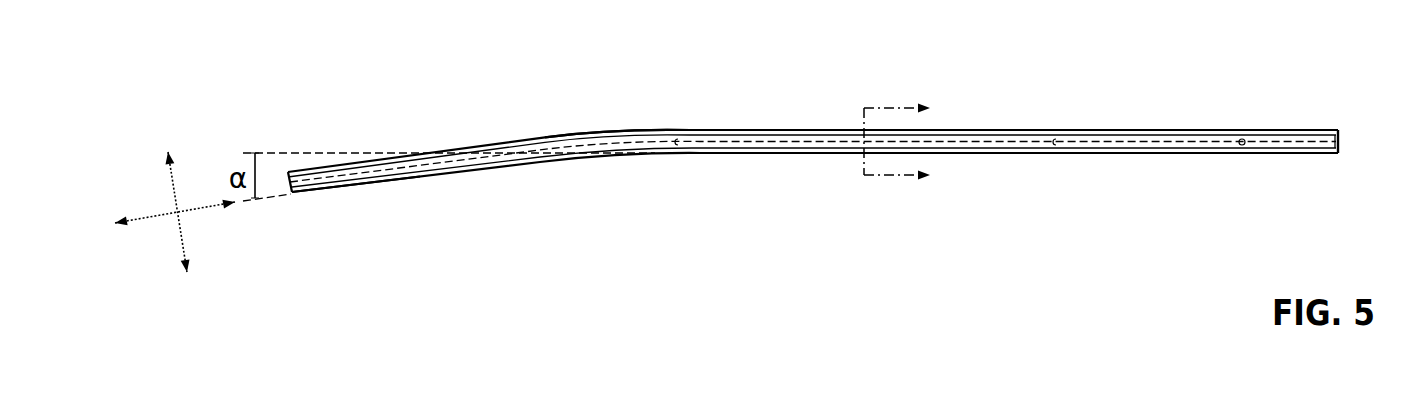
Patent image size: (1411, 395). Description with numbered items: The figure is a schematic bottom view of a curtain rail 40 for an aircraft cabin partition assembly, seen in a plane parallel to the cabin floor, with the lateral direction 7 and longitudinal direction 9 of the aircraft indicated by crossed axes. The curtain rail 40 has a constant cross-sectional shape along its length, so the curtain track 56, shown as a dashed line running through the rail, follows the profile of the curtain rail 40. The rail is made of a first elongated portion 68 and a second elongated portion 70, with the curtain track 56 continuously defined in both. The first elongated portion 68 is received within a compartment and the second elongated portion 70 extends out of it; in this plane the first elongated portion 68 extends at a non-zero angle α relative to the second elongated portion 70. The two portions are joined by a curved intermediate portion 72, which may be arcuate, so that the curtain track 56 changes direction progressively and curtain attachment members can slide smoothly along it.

The curtain rail 40 is at (378, 128).
The curtain track 56 is at (360, 172).
The first elongated portion 68 is at (408, 182).
The second elongated portion 70 is at (1095, 155).
The intermediate portion 72 is at (583, 133).
The lateral direction 7 is at (188, 212).
The longitudinal direction 9 is at (175, 188).